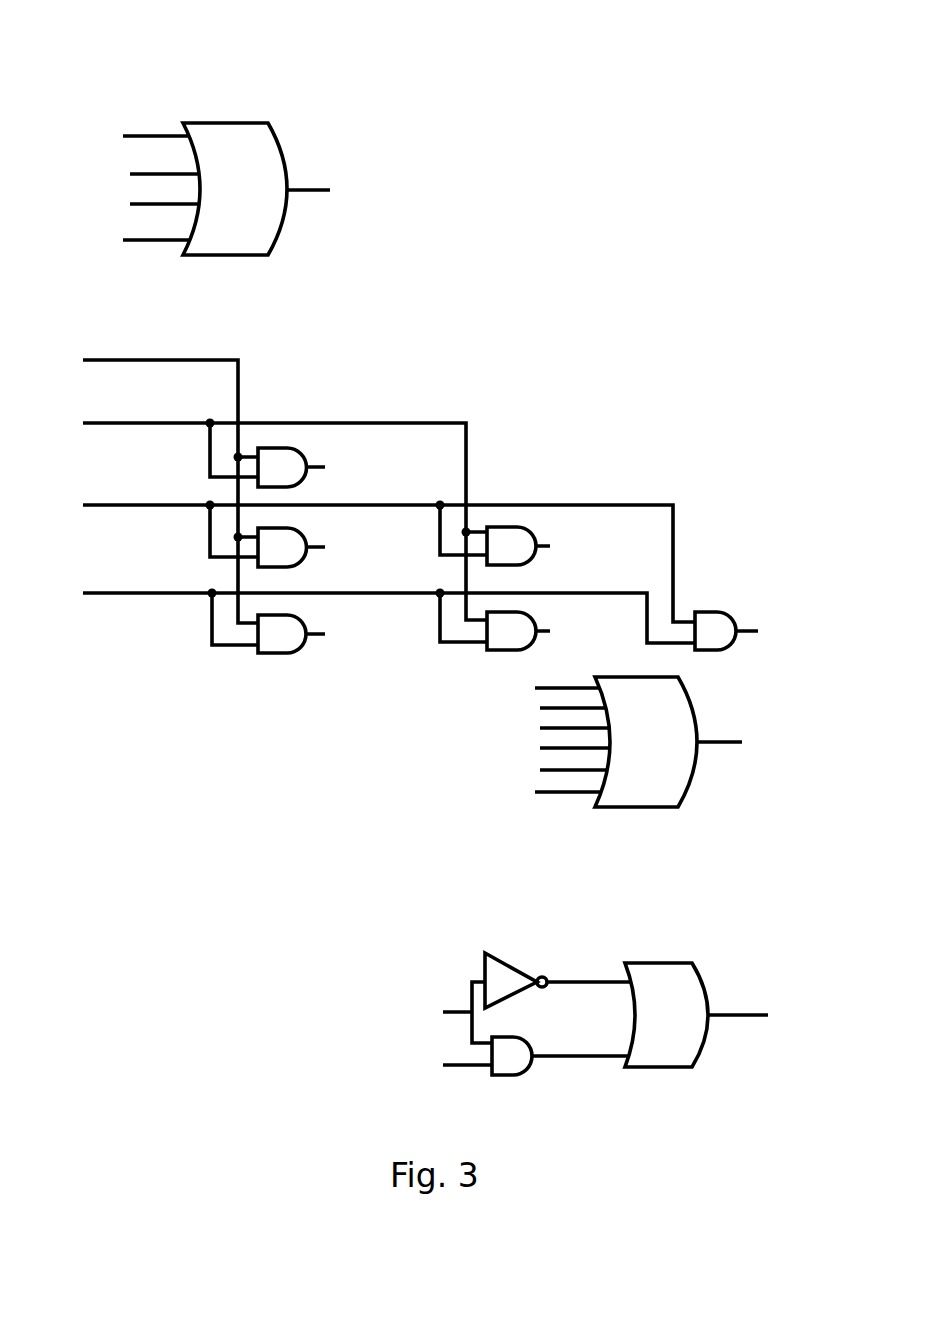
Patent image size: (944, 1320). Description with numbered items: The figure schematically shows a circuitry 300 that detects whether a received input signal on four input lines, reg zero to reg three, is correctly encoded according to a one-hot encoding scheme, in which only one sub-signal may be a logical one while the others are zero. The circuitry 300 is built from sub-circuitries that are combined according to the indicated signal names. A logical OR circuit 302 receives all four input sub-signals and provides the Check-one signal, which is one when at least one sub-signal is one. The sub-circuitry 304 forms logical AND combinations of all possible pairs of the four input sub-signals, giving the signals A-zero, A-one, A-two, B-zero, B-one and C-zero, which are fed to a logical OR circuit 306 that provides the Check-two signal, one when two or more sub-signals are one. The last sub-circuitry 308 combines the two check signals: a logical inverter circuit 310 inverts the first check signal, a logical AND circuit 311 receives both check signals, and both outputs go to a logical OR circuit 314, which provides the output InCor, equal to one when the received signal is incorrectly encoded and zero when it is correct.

The circuitry 300 is at (712, 139).
The logical OR circuit 302 is at (240, 140).
The sub-circuitry 304 is at (560, 379).
The logical OR circuit 306 is at (637, 792).
The sub-circuitry 308 is at (640, 925).
The logical inverter circuit 310 is at (503, 977).
The logical AND circuit 311 is at (528, 1057).
The logical OR circuit 314 is at (663, 1052).